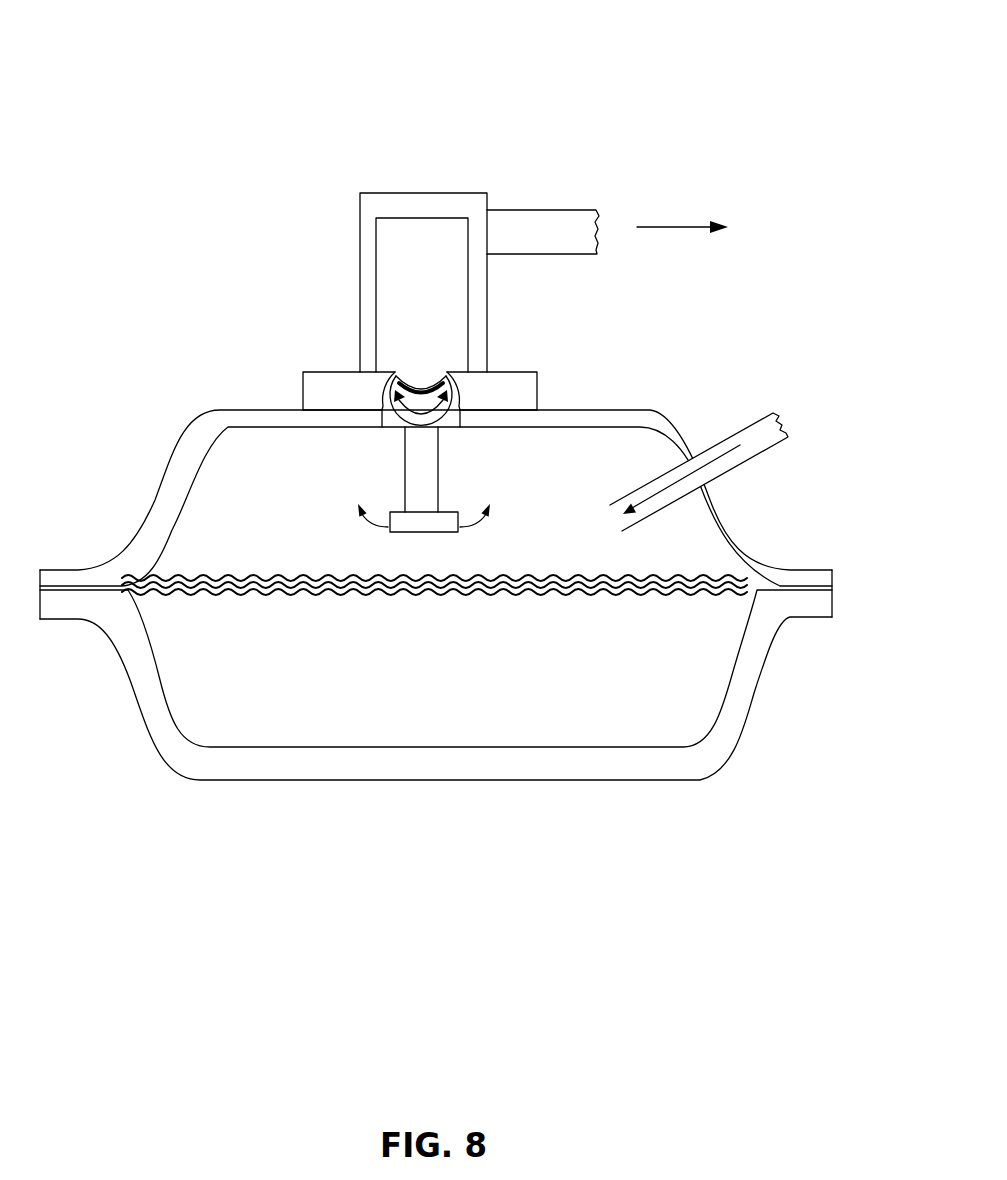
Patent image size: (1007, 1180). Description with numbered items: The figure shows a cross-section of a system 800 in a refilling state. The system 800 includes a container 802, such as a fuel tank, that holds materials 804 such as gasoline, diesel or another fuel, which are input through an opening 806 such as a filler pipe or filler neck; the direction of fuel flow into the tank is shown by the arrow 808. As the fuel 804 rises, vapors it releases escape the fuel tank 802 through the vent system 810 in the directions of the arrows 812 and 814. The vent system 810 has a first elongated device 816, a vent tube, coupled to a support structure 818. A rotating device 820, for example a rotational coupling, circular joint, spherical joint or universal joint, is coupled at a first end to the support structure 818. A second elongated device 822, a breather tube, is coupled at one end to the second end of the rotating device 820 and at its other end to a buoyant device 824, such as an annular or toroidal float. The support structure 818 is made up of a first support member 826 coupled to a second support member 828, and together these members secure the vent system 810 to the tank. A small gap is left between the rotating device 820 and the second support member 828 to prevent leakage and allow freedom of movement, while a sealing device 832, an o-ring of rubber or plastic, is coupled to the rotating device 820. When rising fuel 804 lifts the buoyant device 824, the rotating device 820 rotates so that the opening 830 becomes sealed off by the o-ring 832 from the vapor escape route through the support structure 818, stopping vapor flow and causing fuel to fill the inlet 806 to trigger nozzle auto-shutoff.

The system 800 is at (169, 72).
The container 802 is at (771, 641).
The materials 804 is at (712, 690).
The opening 806 is at (768, 448).
The arrow 808 is at (723, 435).
The vent system 810 is at (416, 336).
The arrow 812 is at (448, 583).
The arrow 814 is at (653, 226).
The first elongated device 816 is at (562, 210).
The support structure 818 is at (362, 305).
The rotating device 820 is at (459, 405).
The second elongated device 822 is at (404, 434).
The buoyant device 824 is at (450, 511).
The first support member 826 is at (366, 193).
The second support member 828 is at (307, 372).
The opening 830 is at (422, 360).
The sealing device 832 is at (398, 401).